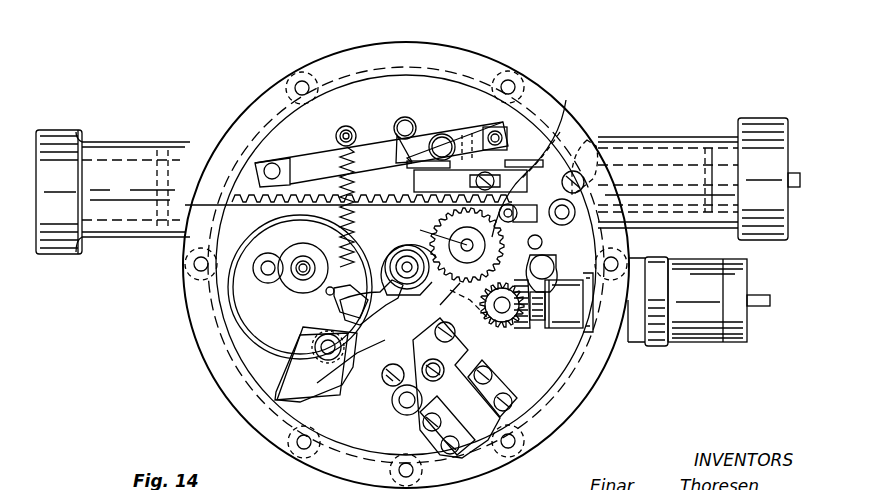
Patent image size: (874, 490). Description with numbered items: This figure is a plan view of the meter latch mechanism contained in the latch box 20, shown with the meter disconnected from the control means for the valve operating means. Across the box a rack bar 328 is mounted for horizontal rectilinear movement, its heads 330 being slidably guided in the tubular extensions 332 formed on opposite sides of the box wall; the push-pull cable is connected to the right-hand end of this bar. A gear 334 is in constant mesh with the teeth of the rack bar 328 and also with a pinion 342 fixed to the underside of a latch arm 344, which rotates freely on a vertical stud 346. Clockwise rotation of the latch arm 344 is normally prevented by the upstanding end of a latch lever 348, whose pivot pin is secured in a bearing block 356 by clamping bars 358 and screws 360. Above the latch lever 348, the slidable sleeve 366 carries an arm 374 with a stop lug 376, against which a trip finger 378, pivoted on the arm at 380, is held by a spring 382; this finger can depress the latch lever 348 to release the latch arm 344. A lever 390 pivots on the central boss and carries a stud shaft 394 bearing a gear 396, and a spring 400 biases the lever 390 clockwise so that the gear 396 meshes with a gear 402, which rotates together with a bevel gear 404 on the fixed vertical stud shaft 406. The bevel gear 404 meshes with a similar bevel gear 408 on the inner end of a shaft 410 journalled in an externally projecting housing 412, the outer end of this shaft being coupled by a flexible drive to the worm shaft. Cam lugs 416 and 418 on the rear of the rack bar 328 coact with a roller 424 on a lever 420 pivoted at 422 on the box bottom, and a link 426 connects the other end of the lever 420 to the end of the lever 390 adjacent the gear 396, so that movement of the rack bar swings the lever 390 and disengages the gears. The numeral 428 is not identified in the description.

The latch box 20 is at (473, 51).
The rack bar 328 is at (582, 141).
The heads 330 is at (150, 152).
The tubular extensions 332 is at (136, 237).
The gear 334 is at (300, 282).
The pinion 342 is at (320, 348).
The latch arm 344 is at (300, 394).
The vertical stud 346 is at (336, 382).
The latch lever 348 is at (385, 372).
The bearing block 356 is at (500, 372).
The clamping bars 358 is at (417, 431).
The screws 360 is at (508, 368).
The sleeve 366 is at (486, 300).
The arm 374 is at (266, 277).
The stop lug 376 is at (351, 347).
The trip finger 378 is at (448, 340).
The pivot 380 is at (348, 301).
The spring 382 is at (340, 313).
The lever 390 is at (398, 246).
The stud shaft 394 is at (406, 205).
The gear 396 is at (462, 228).
The spring 400 is at (368, 148).
The gear 402 is at (557, 269).
The bevel gear 404 is at (524, 322).
The vertical stud shaft 406 is at (564, 303).
The bevel gear 408 is at (569, 302).
The shaft 410 is at (774, 284).
The housing 412 is at (712, 343).
The cam lug 416 is at (417, 137).
The cam lug 418 is at (500, 166).
The lever 420 is at (336, 140).
The pivot 422 is at (278, 162).
The roller 424 is at (440, 134).
The link 426 is at (555, 112).
The pin 428 is at (542, 243).